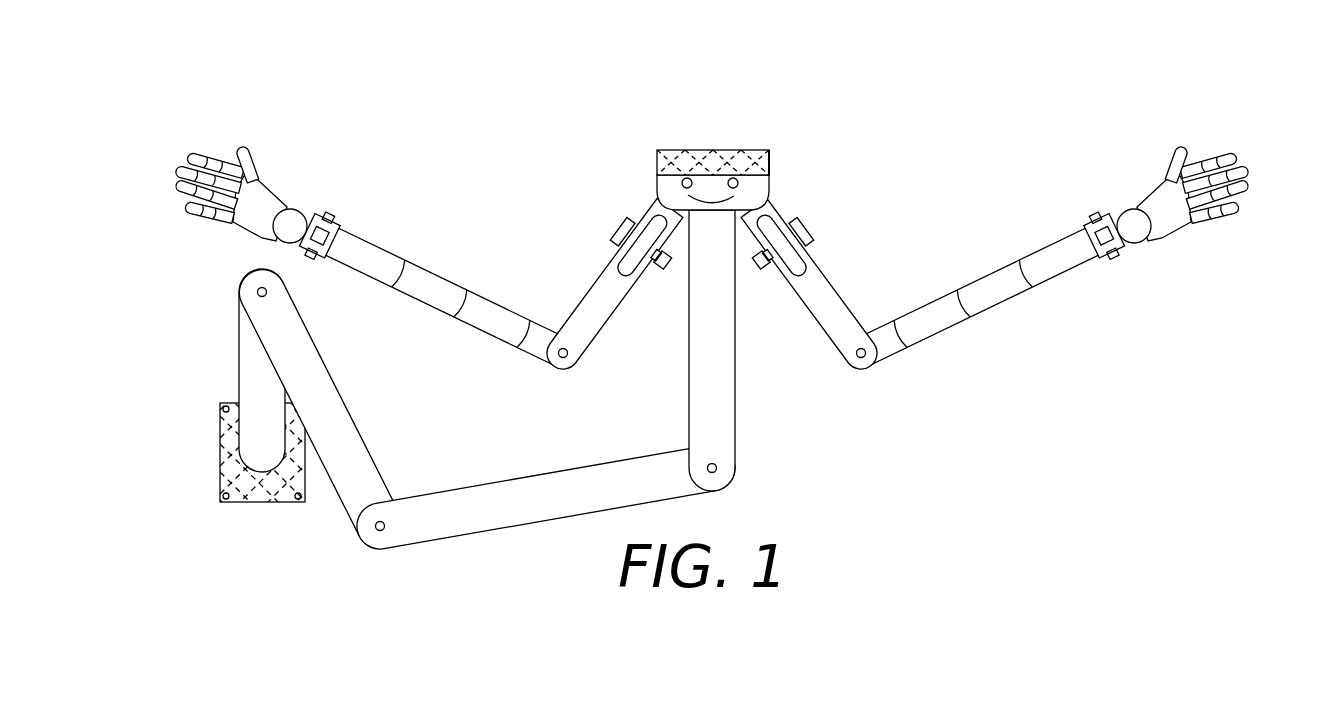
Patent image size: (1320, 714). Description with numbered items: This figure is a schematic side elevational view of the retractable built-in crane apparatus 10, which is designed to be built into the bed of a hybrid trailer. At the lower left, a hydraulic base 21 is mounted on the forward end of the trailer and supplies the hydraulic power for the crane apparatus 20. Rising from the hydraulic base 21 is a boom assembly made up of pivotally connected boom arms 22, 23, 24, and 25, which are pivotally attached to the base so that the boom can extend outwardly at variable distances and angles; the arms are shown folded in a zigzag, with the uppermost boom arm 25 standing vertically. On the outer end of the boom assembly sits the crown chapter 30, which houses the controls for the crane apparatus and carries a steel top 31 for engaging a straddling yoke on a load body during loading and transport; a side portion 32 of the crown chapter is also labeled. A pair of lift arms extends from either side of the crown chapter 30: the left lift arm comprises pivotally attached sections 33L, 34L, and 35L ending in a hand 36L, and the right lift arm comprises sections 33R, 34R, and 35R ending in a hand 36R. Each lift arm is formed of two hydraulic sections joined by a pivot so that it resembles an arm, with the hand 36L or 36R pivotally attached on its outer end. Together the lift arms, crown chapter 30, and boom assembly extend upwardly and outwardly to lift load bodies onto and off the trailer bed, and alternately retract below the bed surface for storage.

The retractable crane apparatus 10 is at (377, 102).
The crane apparatus 20 is at (246, 270).
The hydraulic base 21 is at (263, 501).
The boom arm 22 is at (237, 390).
The boom arm 23 is at (355, 423).
The boom arm 24 is at (514, 477).
The boom arm 25 is at (688, 320).
The crown chapter 30 is at (708, 146).
The steel top 31 is at (733, 157).
The head frame side 32 is at (777, 163).
The lift arm 33R is at (642, 210).
The lift arm 33L is at (778, 210).
The lift arm 34R is at (595, 288).
The lift arm 34L is at (833, 282).
The lift arm 35R is at (460, 252).
The lift arm 35L is at (1062, 247).
The hand 36R is at (275, 202).
The hand 36L is at (1147, 188).